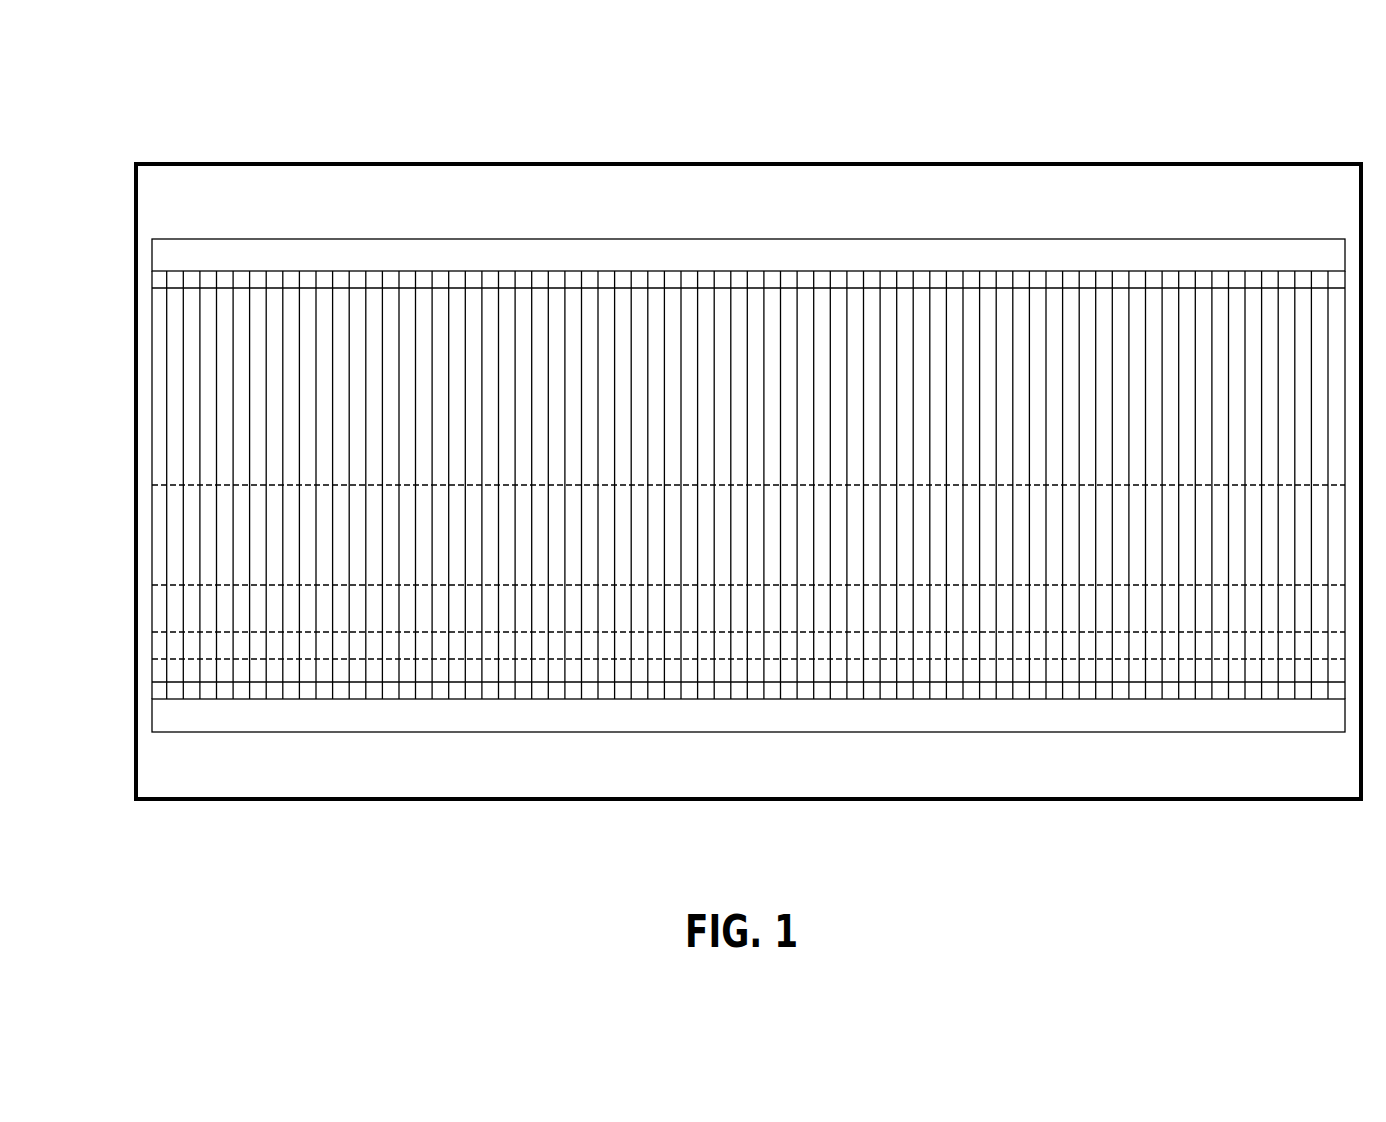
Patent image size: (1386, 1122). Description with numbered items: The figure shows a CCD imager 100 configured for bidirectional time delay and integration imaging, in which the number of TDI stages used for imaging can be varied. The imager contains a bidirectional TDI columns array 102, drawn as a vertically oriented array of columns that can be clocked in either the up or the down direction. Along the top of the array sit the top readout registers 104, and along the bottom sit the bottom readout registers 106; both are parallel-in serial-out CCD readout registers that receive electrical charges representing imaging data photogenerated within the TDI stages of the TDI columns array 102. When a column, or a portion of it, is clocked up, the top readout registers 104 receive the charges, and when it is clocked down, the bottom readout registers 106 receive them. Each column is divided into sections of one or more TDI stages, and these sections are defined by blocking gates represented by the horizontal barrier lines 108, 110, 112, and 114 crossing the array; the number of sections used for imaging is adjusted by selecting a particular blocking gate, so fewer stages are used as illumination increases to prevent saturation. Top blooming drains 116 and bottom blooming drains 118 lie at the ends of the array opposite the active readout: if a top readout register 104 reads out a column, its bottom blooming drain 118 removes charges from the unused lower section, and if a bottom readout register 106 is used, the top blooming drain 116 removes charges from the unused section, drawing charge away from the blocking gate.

The CCD imager 100 is at (741, 70).
The TDI columns array 102 is at (166, 335).
The top readout registers 104 is at (452, 262).
The bottom readout registers 106 is at (220, 718).
The barrier line 108 is at (345, 668).
The barrier line 110 is at (462, 640).
The barrier line 112 is at (552, 595).
The barrier line 114 is at (685, 494).
The top blooming drains 116 is at (1354, 288).
The bottom blooming drains 118 is at (1354, 690).